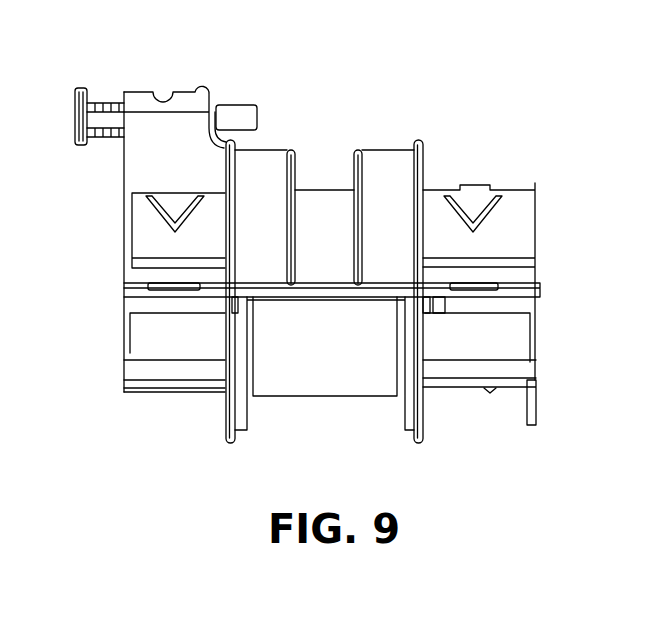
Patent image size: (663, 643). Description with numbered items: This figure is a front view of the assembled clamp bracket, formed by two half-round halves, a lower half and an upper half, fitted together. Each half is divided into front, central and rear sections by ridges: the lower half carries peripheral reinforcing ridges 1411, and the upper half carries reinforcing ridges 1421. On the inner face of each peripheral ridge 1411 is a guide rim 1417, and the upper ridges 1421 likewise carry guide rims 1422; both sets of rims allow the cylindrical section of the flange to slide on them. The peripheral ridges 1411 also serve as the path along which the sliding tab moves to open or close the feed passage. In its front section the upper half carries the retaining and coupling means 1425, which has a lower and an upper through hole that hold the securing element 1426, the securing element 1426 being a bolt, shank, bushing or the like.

The peripheral reinforcing ridges 1411 is at (225, 435).
The guide rim 1417 is at (408, 410).
The reinforcing ridges 1421 is at (425, 157).
The guide rims 1422 is at (265, 173).
The retaining and coupling means of the securing element 1425 is at (178, 105).
The securing element 1426 is at (105, 113).